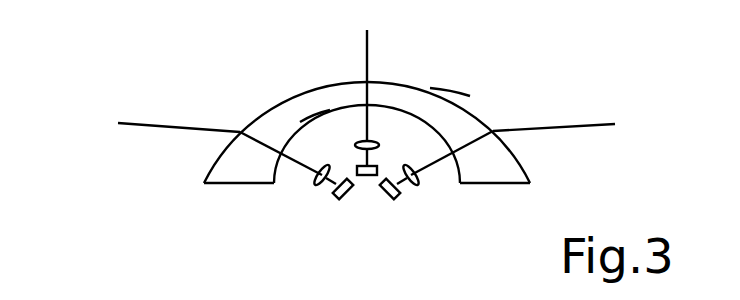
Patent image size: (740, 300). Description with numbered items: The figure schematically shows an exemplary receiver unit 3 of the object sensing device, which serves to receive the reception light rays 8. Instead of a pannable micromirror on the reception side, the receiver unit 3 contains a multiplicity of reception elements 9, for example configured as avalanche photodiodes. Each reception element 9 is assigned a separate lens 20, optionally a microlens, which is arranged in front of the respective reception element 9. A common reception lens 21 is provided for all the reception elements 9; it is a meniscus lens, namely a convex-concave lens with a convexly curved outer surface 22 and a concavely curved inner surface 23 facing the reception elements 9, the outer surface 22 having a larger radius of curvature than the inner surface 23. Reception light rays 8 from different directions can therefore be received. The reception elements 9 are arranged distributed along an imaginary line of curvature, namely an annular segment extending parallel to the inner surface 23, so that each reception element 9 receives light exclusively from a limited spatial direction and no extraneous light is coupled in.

The receiver unit 3 is at (108, 84).
The reception light rays 8 is at (160, 123).
The reception element 9 is at (338, 202).
The lens 20 is at (457, 205).
The reception lens 21 is at (455, 118).
The convexly curved outer surface 22 is at (444, 90).
The concavely curved inner surface 23 is at (323, 114).